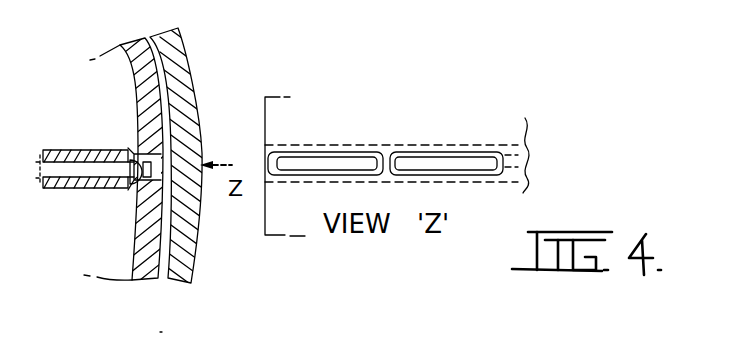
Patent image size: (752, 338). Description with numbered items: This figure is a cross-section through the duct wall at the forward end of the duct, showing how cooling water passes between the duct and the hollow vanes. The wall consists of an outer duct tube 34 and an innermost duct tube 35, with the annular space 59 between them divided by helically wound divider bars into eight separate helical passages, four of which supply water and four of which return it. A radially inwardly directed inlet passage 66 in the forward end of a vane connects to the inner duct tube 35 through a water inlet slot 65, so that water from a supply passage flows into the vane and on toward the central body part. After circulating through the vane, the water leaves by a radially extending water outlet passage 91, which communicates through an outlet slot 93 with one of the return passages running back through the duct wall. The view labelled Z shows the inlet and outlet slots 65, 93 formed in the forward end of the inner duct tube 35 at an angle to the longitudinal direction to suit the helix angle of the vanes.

The duct tube 34 is at (178, 283).
The innermost duct tube 35 is at (143, 280).
The annular space 59 is at (170, 222).
The water inlet slot 65 is at (140, 187).
The inlet passage 66 is at (95, 150).
The water outlet passage 91 is at (465, 152).
The outlet slot 93 is at (413, 165).